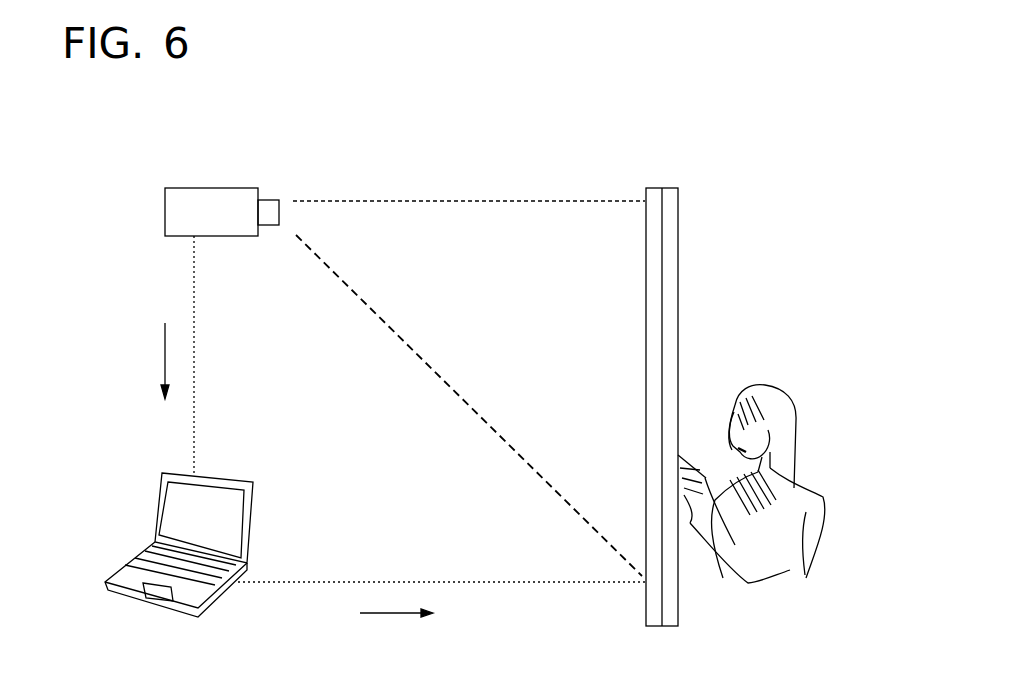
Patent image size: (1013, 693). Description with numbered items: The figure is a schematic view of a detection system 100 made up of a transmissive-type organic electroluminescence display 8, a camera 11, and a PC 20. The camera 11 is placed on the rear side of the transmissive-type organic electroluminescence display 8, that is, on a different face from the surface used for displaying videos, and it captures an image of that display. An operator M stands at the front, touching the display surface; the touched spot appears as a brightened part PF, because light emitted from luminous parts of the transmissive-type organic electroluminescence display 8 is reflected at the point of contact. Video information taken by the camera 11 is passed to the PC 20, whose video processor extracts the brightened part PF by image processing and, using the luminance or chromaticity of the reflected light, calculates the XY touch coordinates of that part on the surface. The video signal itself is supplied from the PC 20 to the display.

The detection system 100 is at (748, 148).
The camera 11 is at (218, 189).
The transmissive-type organic electroluminescence display 8 is at (672, 186).
The PC 20 is at (230, 478).
The operator M is at (808, 513).
The brightened part PF is at (684, 452).